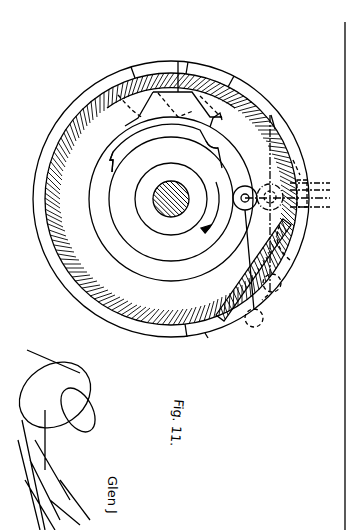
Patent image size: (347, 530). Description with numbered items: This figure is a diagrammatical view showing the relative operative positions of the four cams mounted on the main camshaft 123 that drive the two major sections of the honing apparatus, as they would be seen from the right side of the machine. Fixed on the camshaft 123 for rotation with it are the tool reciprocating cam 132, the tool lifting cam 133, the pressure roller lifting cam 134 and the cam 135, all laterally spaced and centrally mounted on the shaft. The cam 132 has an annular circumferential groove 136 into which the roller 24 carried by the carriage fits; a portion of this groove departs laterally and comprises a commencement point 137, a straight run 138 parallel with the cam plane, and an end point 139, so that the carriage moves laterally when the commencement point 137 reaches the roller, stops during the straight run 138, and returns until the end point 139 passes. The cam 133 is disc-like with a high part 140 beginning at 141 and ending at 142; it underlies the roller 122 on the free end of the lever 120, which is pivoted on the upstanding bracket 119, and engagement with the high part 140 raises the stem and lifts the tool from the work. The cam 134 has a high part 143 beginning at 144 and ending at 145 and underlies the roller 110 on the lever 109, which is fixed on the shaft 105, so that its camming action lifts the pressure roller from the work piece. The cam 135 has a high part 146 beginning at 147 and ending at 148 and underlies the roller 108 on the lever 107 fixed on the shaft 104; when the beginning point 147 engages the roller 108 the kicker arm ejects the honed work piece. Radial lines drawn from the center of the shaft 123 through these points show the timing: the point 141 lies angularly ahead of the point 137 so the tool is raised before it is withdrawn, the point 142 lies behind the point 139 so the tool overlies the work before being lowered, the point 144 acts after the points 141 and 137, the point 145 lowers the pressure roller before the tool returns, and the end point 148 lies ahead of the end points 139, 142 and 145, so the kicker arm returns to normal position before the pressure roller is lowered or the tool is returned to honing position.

The end point 139 is at (72, 118).
The straight run 138 is at (163, 70).
The cam 135 is at (216, 83).
The high part 146 is at (145, 73).
The high part 143 is at (178, 61).
The commencement point 137 is at (238, 80).
The end point 148 is at (120, 90).
The end point 145 is at (157, 94).
The beginning point 147 is at (196, 95).
The beginning point 144 is at (211, 124).
The high part 140 is at (163, 125).
The beginning point 141 is at (207, 147).
The end point 142 is at (113, 168).
The tool lifting cam 133 is at (118, 238).
The pressure roller lifting cam 134 is at (148, 278).
The main camshaft 123 is at (156, 213).
The roller 122 is at (246, 187).
The roller 108 is at (268, 184).
The shaft 104 is at (277, 120).
The lever 107 is at (293, 160).
The roller 24 is at (298, 207).
The roller 110 is at (290, 260).
The lever 109 is at (282, 283).
The shaft 105 is at (268, 295).
The bracket 119 is at (255, 328).
The lever 120 is at (250, 263).
The annular circumferential groove 136 is at (187, 337).
The tool reciprocating cam 132 is at (208, 338).